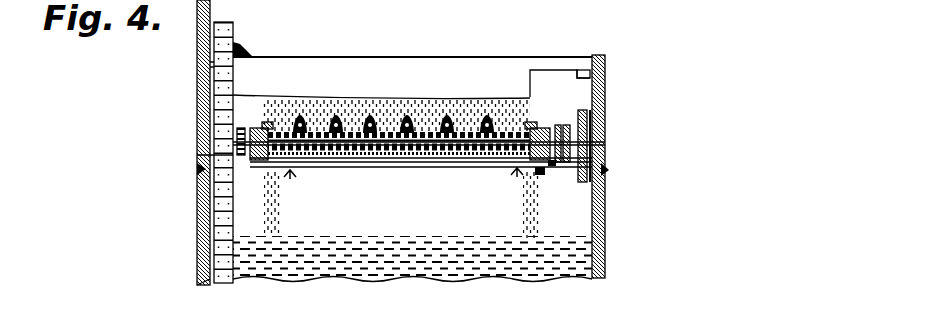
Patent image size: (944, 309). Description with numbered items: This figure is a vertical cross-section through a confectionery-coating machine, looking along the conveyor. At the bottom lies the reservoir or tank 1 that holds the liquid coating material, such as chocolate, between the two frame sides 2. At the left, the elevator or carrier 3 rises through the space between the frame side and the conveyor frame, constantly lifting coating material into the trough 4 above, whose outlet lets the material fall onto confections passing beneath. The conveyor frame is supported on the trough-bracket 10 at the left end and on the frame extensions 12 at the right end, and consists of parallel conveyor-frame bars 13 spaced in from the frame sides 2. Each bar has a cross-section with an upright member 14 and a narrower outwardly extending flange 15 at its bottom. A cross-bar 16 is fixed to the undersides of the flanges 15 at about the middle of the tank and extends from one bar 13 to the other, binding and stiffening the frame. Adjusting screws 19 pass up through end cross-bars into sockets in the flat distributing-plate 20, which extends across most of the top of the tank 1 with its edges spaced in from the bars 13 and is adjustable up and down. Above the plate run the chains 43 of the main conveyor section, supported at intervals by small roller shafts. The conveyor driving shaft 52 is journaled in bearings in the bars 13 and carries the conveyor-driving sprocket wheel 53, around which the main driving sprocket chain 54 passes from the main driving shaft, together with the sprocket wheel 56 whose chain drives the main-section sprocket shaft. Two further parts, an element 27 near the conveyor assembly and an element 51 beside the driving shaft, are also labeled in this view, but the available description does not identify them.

The reservoir or tank 1 is at (200, 247).
The frame sides 2 is at (198, 128).
The elevator or carrier 3 is at (234, 31).
The trough 4 is at (327, 64).
The trough-bracket 10 is at (213, 157).
The frame extensions 12 is at (603, 148).
The conveyor-frame bars 13 is at (255, 163).
The upright member 14 is at (268, 127).
The flange 15 is at (253, 160).
The cross-bar 16 is at (388, 163).
The adjusting screws 19 is at (290, 180).
The distributing-plate 20 is at (438, 167).
The conveyor chain 27 is at (344, 155).
The chains 43 is at (372, 150).
The disc 51 is at (568, 125).
The conveyor driving shaft 52 is at (606, 143).
The conveyor-driving sprocket wheel 53 is at (605, 118).
The main driving sprocket chain 54 is at (605, 100).
The sprocket wheel 56 is at (557, 127).